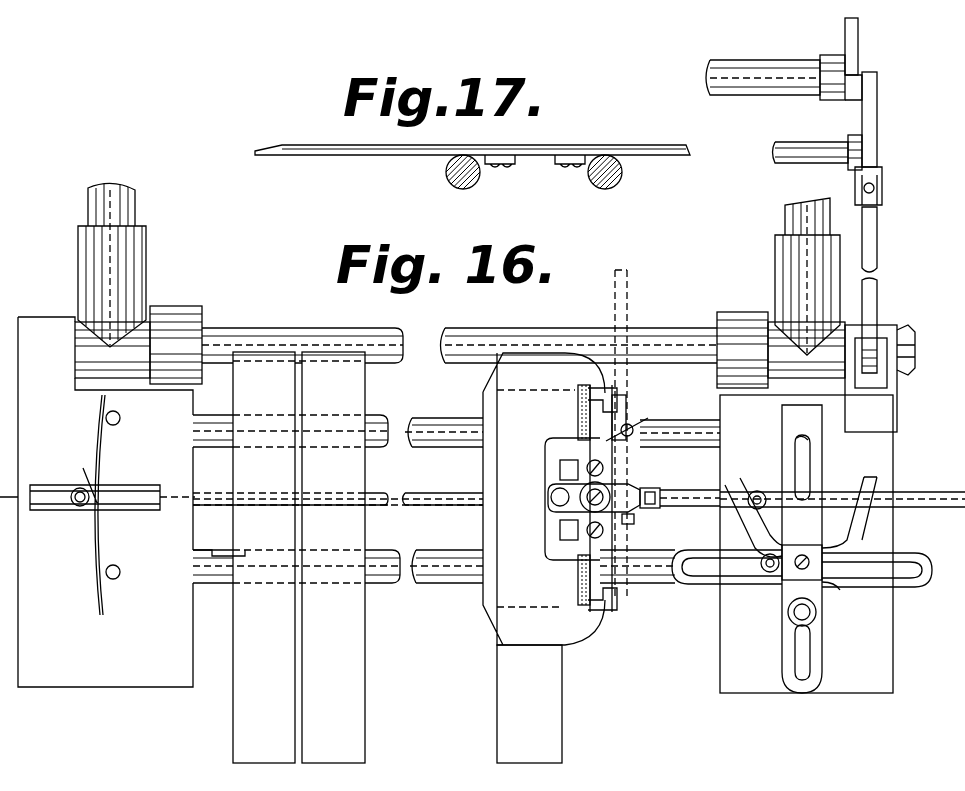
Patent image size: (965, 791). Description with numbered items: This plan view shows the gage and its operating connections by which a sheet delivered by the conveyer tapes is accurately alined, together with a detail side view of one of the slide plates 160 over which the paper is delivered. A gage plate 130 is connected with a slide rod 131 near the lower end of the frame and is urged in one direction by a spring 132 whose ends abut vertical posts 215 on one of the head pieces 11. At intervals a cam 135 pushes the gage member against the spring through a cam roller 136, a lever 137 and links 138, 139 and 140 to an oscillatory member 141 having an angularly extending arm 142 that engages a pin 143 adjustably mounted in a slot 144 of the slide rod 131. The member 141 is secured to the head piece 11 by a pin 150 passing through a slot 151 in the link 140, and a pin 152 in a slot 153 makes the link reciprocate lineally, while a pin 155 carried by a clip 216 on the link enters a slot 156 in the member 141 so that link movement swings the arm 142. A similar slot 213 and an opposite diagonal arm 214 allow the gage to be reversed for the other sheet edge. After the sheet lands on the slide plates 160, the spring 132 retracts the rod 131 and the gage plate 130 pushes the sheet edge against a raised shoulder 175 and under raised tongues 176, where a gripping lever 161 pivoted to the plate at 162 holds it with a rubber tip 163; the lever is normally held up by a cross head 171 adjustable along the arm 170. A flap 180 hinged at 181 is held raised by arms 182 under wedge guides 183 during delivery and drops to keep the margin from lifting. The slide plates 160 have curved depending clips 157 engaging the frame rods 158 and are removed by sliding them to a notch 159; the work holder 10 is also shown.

In FIG. 16, the conical work holder 10 is at (120, 204).
In FIG. 16, the head piece 11 is at (446, 505).
In FIG. 16, the gage plate 130 is at (484, 474).
In FIG. 16, the slide rod 131 is at (405, 500).
In FIG. 16, the spring 132 is at (100, 549).
In FIG. 16, the cam 135 is at (858, 38).
In FIG. 16, the cam roller 136 is at (784, 112).
In FIG. 16, the lever 137 is at (878, 124).
In FIG. 16, the link 138 is at (877, 235).
In FIG. 16, the link 139 is at (880, 378).
In FIG. 16, the link 140 is at (828, 410).
In FIG. 16, the oscillatory member 141 is at (838, 585).
In FIG. 16, the arm 142 is at (730, 481).
In FIG. 16, the pin 143 is at (757, 491).
In FIG. 16, the slot 144 is at (829, 492).
In FIG. 16, the pin 150 is at (817, 613).
In FIG. 16, the slot 151 is at (811, 649).
In FIG. 16, the pin 152 is at (797, 441).
In FIG. 16, the slot 153 is at (811, 466).
In FIG. 16, the pin 155 is at (767, 574).
In FIG. 16, the slot 156 is at (728, 588).
In FIG. 17, the clip 157 is at (487, 172).
In FIG. 17, the frame rod 158 is at (463, 186).
In FIG. 16, the frame rod 158 is at (431, 418).
In FIG. 16, the notch 159 is at (218, 549).
In FIG. 16, the slide plate 160 is at (397, 557).
In FIG. 16, the lever 161 is at (645, 488).
In FIG. 16, the pivot 162 is at (631, 524).
In FIG. 16, the tip 163 is at (557, 504).
In FIG. 16, the arm 170 is at (625, 303).
In FIG. 16, the cross head 171 is at (700, 508).
In FIG. 16, the raised shoulder 175 is at (572, 499).
In FIG. 16, the raised tongue 176 is at (558, 471).
In FIG. 16, the flap 180 is at (544, 499).
In FIG. 16, the hinge 181 is at (578, 424).
In FIG. 16, the arm 182 is at (600, 392).
In FIG. 16, the wedge guide 183 is at (632, 408).
In FIG. 16, the slot 213 is at (905, 558).
In FIG. 16, the arm 214 is at (880, 484).
In FIG. 16, the vertical post 215 is at (120, 418).
In FIG. 16, the clip 216 is at (789, 546).